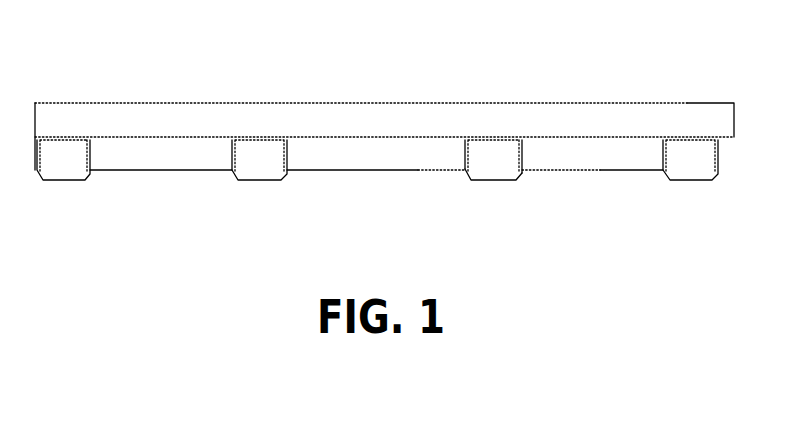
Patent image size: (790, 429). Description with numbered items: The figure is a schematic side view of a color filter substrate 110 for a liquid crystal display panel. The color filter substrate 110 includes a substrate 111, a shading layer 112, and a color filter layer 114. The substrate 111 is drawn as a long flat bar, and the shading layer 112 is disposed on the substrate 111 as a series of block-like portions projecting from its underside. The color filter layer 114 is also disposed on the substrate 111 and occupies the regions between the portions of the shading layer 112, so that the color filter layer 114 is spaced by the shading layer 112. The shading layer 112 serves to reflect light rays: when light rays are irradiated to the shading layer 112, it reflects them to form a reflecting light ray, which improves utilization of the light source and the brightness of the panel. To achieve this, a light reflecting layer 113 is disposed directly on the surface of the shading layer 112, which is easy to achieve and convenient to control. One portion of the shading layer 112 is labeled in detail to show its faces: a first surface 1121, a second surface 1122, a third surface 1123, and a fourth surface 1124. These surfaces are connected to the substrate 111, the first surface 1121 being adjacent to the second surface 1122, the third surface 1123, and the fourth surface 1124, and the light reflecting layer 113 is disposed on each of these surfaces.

The color filter substrate 110 is at (462, 93).
The substrate 111 is at (602, 122).
The shading layer 112 is at (65, 158).
The light reflecting layer 113 is at (232, 137).
The color filter layer 114 is at (362, 150).
The first surface 1121 is at (493, 142).
The second surface 1122 is at (465, 166).
The third surface 1123 is at (520, 158).
The fourth surface 1124 is at (492, 173).